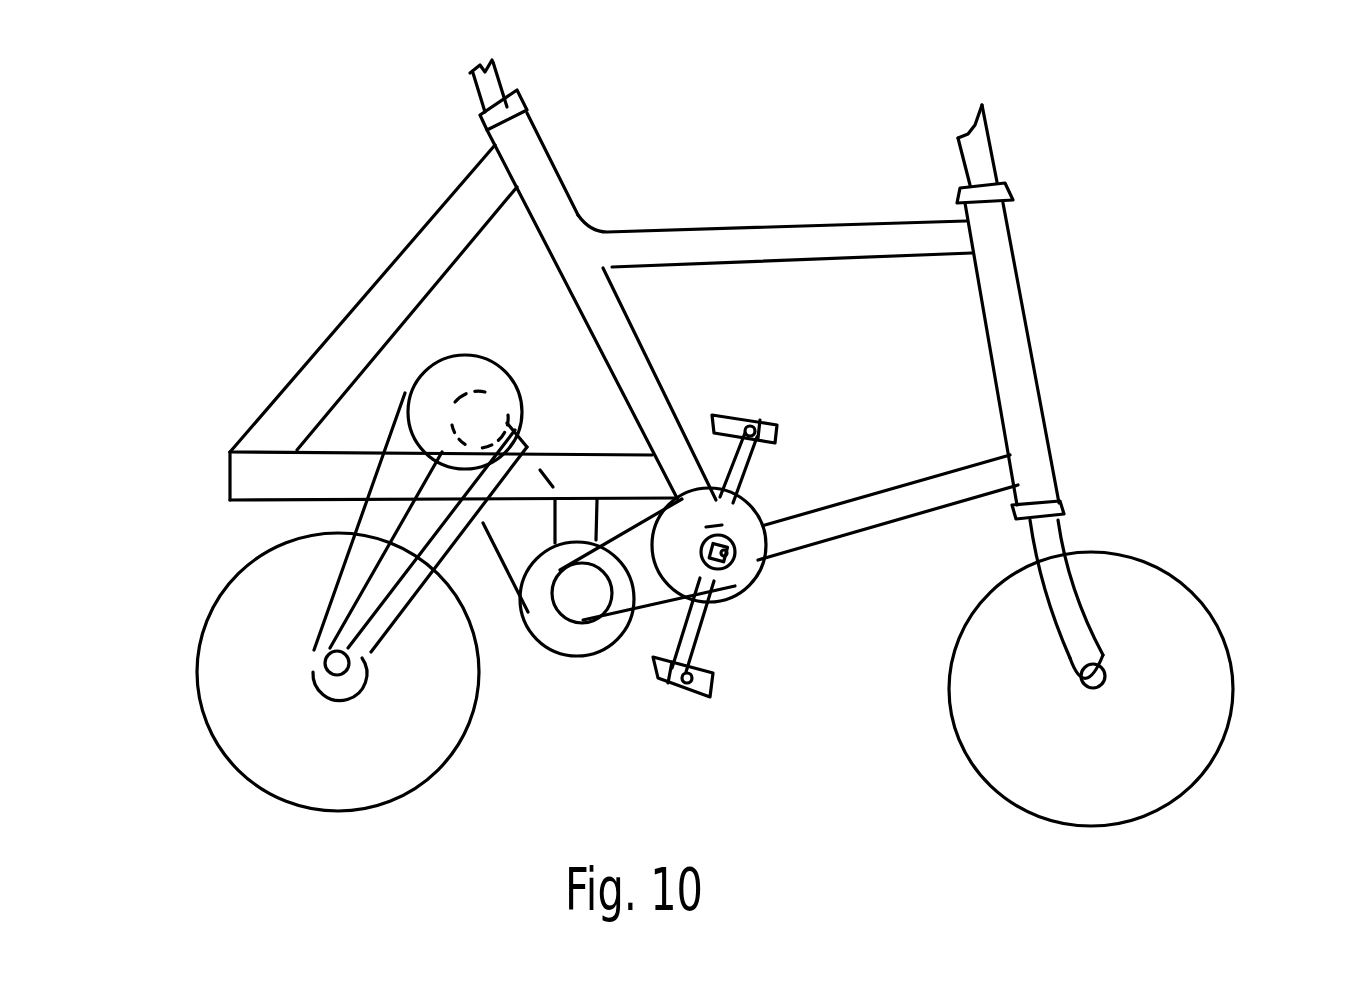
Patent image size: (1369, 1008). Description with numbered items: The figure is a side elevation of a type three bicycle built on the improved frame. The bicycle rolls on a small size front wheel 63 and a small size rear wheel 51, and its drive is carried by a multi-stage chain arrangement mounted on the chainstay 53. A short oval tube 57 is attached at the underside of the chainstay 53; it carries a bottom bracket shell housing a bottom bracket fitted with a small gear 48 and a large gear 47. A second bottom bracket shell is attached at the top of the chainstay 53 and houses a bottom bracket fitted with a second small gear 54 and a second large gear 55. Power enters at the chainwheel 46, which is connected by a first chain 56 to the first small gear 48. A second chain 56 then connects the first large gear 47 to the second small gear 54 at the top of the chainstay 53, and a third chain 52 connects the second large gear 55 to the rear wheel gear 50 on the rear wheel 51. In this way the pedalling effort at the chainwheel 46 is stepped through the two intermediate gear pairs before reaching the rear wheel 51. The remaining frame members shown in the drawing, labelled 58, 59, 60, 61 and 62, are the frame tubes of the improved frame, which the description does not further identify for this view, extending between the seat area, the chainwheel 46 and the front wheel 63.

The chainwheel 46 is at (757, 560).
The large gear 47 is at (603, 650).
The small gear 48 is at (570, 602).
The rear wheel gear 50 is at (325, 667).
The rear wheel 51 is at (195, 671).
The third chain 52 is at (395, 543).
The chainstay 53 is at (247, 478).
The small gear 54 is at (475, 407).
The large gear 55 is at (510, 385).
The chain 56 is at (523, 443).
The short oval tube 57 is at (575, 525).
The frame strut 58 is at (413, 250).
The seat tube 59 is at (645, 375).
The top tube 60 is at (807, 237).
The down tube 61 is at (903, 486).
The head tube 62 is at (1028, 368).
The front wheel 63 is at (1240, 675).